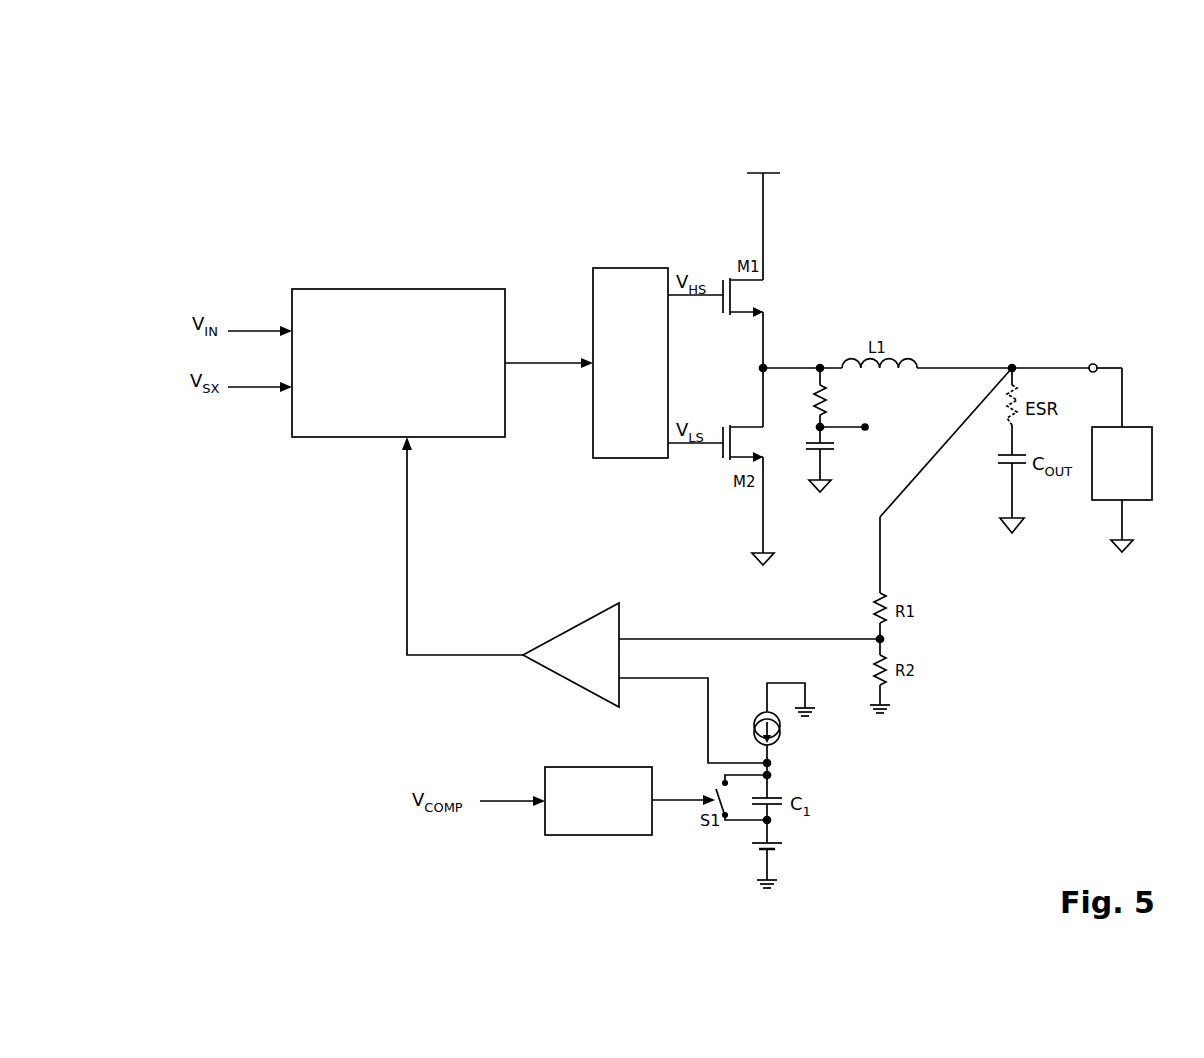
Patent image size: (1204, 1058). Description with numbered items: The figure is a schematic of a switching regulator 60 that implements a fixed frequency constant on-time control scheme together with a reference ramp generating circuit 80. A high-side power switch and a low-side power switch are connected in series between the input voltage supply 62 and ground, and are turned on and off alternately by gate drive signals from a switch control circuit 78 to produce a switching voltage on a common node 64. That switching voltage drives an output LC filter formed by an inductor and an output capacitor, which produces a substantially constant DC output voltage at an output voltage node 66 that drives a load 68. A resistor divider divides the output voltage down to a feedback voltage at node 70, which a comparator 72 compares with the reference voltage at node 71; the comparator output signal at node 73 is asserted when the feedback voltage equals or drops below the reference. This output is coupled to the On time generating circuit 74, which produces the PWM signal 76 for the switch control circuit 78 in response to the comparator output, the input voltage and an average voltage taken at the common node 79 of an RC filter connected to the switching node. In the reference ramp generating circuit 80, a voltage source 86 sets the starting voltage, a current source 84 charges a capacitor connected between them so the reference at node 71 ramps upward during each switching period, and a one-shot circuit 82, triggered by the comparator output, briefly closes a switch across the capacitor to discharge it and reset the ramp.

The switching regulator 60 is at (982, 103).
The input voltage supply / ground 62 is at (772, 175).
The common node 64 is at (766, 371).
The output voltage node 66 is at (1022, 366).
The load 68 is at (1138, 427).
The feedback voltage node 70 is at (783, 638).
The reference voltage node 71 is at (710, 684).
The comparator 72 is at (557, 678).
The comparator output node 73 is at (419, 658).
The On time generating circuit 74 is at (398, 363).
The PWM signal 76 is at (548, 366).
The switch control circuit 78 is at (630, 363).
The common node 79 is at (817, 430).
The reference ramp generating circuit 80 is at (598, 877).
The one-shot circuit 82 is at (627, 767).
The current source 84 is at (778, 742).
The voltage source 86 is at (760, 848).